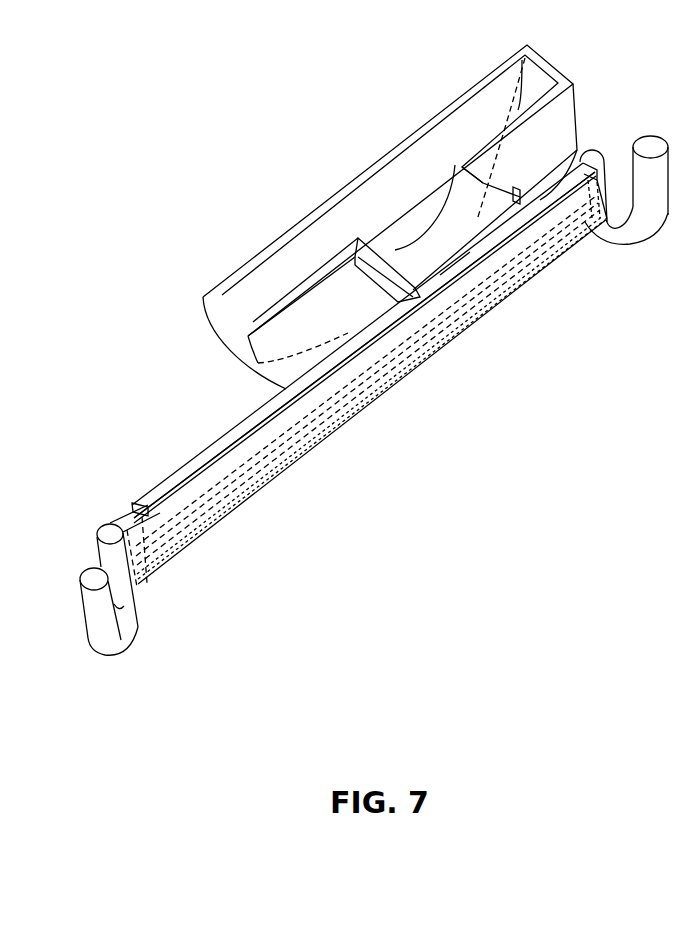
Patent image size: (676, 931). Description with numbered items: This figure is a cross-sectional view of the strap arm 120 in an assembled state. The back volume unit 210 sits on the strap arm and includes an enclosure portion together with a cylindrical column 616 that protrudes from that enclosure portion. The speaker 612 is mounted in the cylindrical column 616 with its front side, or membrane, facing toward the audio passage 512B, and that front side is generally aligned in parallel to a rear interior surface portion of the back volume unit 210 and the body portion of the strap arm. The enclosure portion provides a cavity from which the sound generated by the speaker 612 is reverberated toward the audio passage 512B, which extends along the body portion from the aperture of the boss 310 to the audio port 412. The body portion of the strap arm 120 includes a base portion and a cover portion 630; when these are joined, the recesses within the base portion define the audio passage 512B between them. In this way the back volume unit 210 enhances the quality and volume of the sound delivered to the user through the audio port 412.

The strap arm 120 is at (368, 217).
The back volume unit 210 is at (372, 175).
The boss 310 is at (517, 193).
The audio port 412 is at (130, 506).
The audio passage 512B is at (220, 457).
The speaker 612 is at (460, 270).
The cylindrical column 616 is at (487, 190).
The cover portion 630 is at (287, 428).